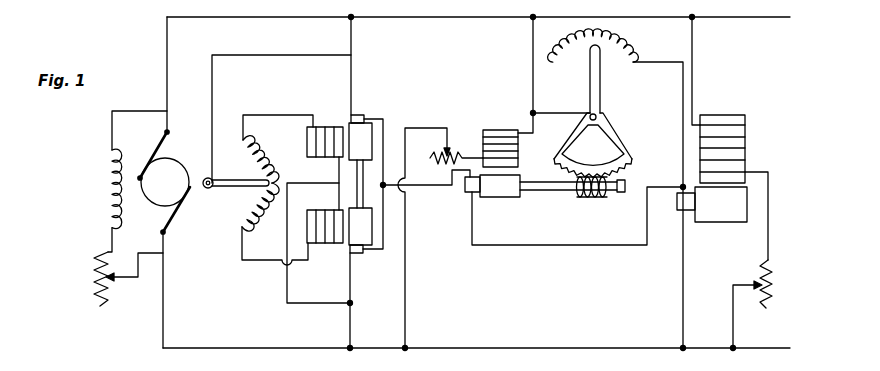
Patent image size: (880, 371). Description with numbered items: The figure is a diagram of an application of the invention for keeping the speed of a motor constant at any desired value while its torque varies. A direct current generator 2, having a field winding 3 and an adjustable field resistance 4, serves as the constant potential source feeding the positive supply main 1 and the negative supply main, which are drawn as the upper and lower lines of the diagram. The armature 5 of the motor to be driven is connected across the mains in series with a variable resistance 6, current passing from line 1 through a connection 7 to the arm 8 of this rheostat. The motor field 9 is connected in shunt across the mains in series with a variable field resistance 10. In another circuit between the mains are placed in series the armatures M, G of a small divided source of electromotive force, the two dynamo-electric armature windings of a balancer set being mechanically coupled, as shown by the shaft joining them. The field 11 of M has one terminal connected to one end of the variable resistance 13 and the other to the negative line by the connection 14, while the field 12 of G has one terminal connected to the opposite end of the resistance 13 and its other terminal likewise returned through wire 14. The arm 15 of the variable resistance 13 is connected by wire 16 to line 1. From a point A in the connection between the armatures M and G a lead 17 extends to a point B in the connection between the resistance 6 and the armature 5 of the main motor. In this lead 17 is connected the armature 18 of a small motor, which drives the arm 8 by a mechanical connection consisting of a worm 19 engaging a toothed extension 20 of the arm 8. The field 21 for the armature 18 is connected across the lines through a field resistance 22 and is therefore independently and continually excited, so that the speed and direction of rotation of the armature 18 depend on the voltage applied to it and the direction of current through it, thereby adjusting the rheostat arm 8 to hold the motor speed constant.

The positive supply main 1 is at (452, 20).
The direct current generator 2 is at (164, 182).
The field winding 3 is at (129, 181).
The adjustable field resistance 4 is at (118, 279).
The armature 5 is at (712, 204).
The variable resistance 6 is at (615, 188).
The connection 7 is at (533, 82).
The rheostat arm 8 is at (600, 83).
The motor field 9 is at (730, 138).
The variable field resistance 10 is at (763, 304).
The field of M 11 is at (318, 127).
The field of G 12 is at (326, 243).
The variable resistance 13 is at (277, 190).
The connection 14 is at (287, 287).
The arm of variable resistance 15 is at (232, 187).
The wire 16 is at (212, 88).
The lead 17 is at (527, 245).
The armature of small motor 18 is at (492, 186).
The worm 19 is at (597, 197).
The toothed extension 20 is at (586, 174).
The field 21 is at (518, 152).
The field resistance 22 is at (440, 238).
The point A is at (419, 182).
The point B is at (681, 186).
The armature M of balancer set M is at (360, 161).
The armature G of balancer set G is at (366, 233).